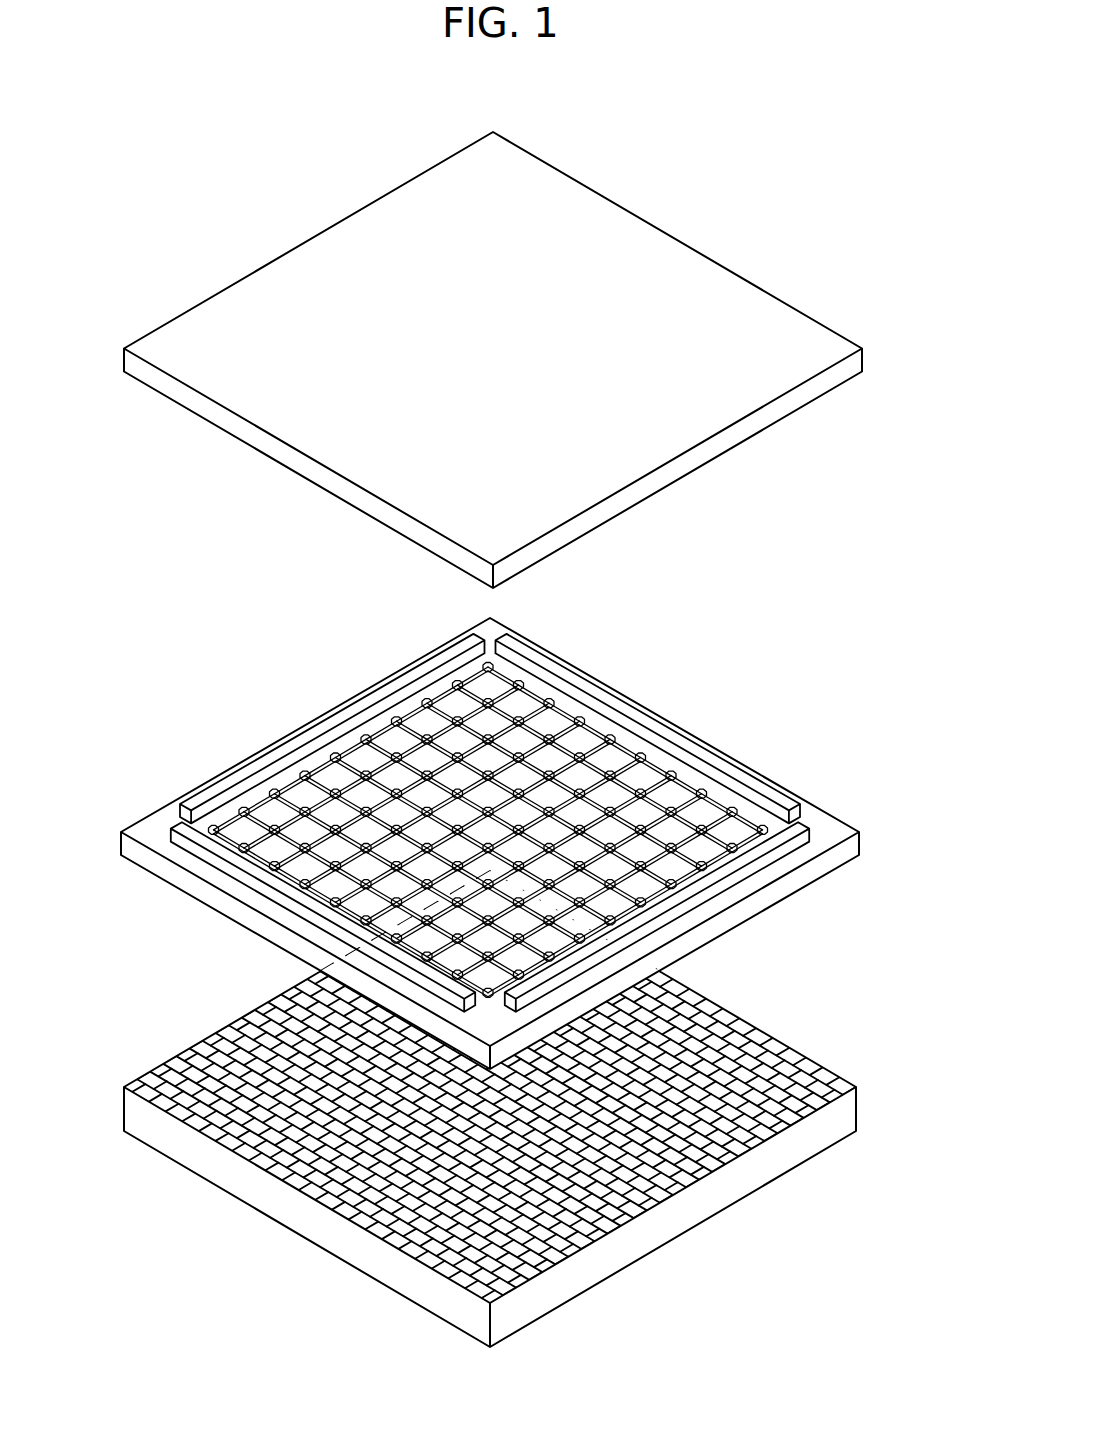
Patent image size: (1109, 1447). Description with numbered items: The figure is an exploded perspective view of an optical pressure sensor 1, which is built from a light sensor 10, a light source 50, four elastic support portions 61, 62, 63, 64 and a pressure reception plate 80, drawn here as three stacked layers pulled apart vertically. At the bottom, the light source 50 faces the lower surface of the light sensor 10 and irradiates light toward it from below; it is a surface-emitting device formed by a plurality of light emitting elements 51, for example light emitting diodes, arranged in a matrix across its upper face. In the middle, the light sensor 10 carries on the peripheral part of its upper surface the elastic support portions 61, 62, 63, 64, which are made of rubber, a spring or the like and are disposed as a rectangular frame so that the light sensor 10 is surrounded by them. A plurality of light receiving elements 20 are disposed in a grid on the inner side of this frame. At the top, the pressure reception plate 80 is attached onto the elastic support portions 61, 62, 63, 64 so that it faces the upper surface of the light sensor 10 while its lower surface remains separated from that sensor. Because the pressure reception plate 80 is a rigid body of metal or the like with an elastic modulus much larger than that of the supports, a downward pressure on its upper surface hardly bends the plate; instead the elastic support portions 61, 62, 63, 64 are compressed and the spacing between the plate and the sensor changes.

The optical pressure sensor 1 is at (308, 178).
The light sensor 10 is at (850, 850).
The light receiving elements 20 is at (551, 704).
The light source 50 is at (572, 1283).
The light emitting elements 51 is at (415, 1243).
The elastic support portion 61 is at (687, 745).
The elastic support portion 62 is at (290, 745).
The elastic support portion 63 is at (255, 890).
The elastic support portion 64 is at (725, 922).
The pressure reception plate 80 is at (853, 369).